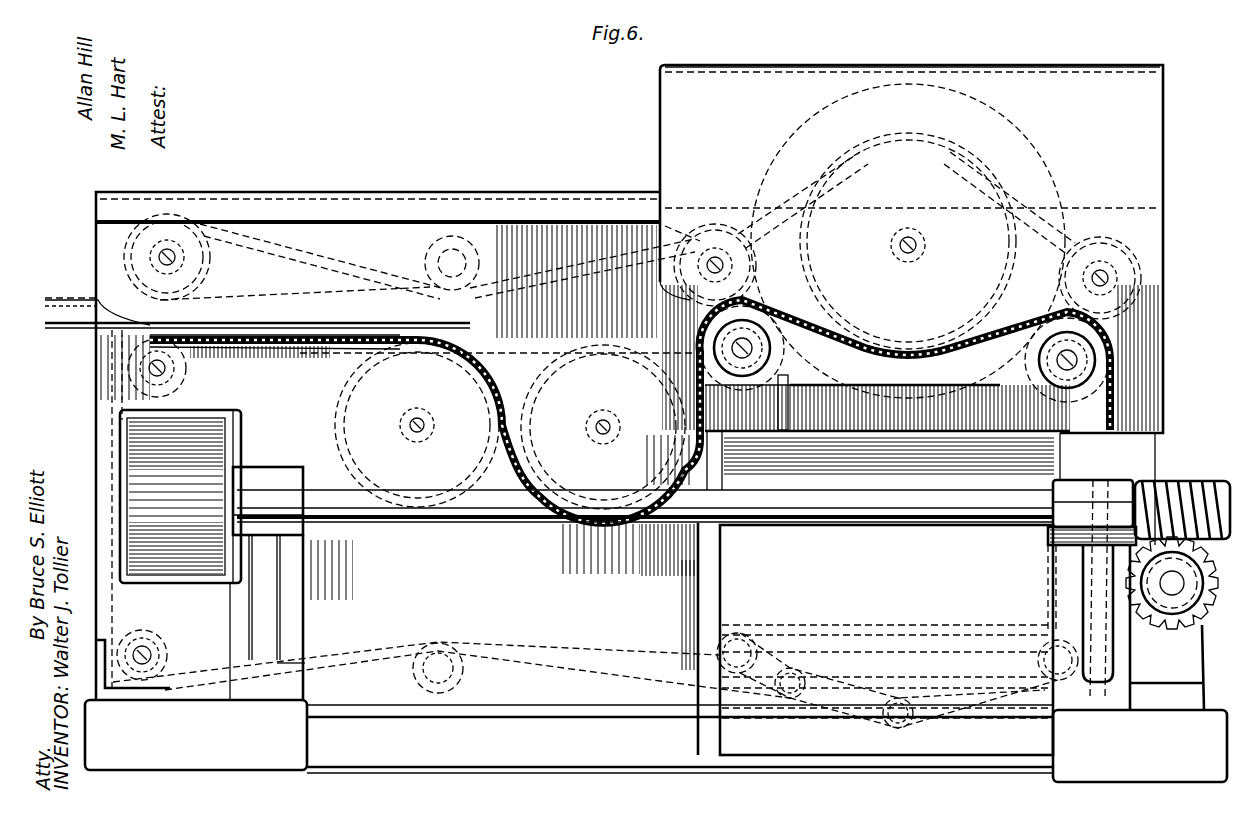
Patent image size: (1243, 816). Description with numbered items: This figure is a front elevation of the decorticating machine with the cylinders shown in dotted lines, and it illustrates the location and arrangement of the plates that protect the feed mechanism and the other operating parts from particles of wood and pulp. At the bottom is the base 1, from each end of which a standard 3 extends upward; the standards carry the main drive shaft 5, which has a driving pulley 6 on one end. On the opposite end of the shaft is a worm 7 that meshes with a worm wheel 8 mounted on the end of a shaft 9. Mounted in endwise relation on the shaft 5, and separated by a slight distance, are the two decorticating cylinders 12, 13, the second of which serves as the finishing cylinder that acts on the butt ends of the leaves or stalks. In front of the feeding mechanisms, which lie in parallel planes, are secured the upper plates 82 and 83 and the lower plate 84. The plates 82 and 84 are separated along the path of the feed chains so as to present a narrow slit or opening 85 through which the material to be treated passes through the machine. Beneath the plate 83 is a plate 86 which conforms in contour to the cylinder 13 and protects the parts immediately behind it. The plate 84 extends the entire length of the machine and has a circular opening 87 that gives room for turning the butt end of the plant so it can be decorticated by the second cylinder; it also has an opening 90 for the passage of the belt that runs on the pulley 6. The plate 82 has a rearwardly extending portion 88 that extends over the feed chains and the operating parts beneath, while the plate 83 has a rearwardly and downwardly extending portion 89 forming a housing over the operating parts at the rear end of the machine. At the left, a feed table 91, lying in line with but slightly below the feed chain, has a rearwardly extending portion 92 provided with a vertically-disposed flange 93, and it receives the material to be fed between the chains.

The base 1 is at (656, 663).
The standards 3 is at (262, 473).
The main drive shaft 5 is at (508, 522).
The driving pulley 6 is at (180, 496).
The worm 7 is at (1198, 486).
The worm wheel 8 is at (1214, 592).
The shaft 9 is at (1176, 587).
The decorticating cylinder 12 is at (553, 650).
The finishing cylinder 13 is at (843, 650).
The upper plate 82 is at (431, 262).
The upper plate 83 is at (911, 249).
The lower plate 84 is at (510, 549).
The slit or opening 85 is at (298, 325).
The plate 86 is at (897, 640).
The circular opening 87 is at (810, 432).
The rearwardly extending portion 88 is at (408, 199).
The rearwardly and downwardly extending portion 89 is at (866, 70).
The opening 90 is at (158, 580).
The feed table 91 is at (292, 350).
The rearwardly extending portion 92 is at (257, 360).
The vertically-disposed flange 93 is at (68, 297).